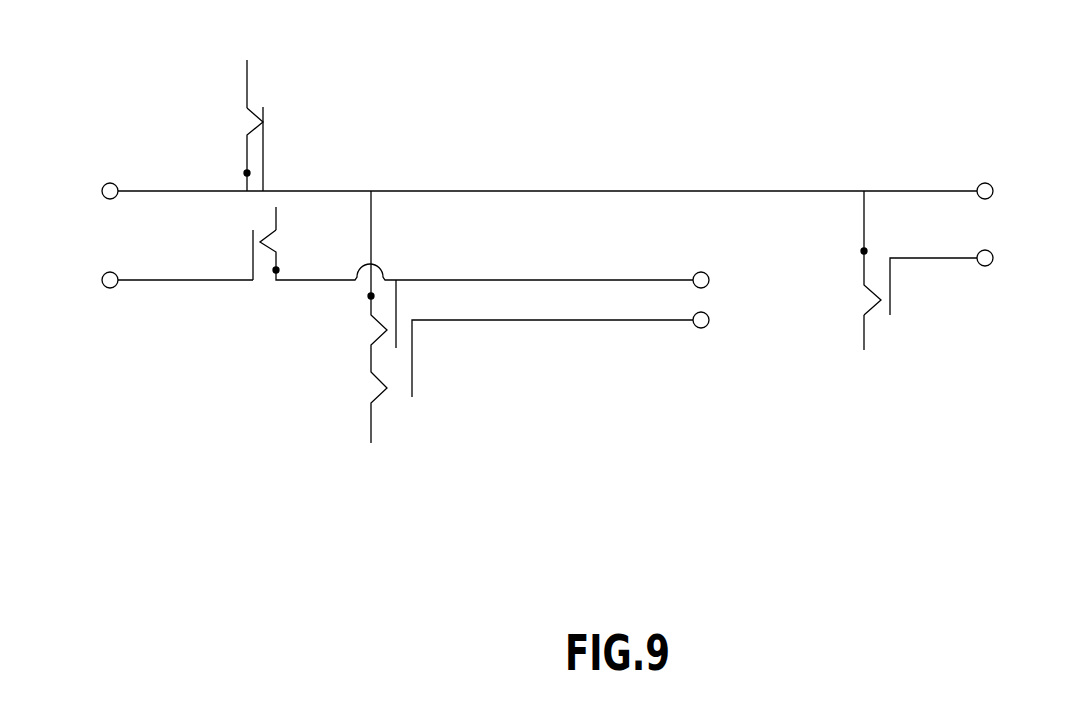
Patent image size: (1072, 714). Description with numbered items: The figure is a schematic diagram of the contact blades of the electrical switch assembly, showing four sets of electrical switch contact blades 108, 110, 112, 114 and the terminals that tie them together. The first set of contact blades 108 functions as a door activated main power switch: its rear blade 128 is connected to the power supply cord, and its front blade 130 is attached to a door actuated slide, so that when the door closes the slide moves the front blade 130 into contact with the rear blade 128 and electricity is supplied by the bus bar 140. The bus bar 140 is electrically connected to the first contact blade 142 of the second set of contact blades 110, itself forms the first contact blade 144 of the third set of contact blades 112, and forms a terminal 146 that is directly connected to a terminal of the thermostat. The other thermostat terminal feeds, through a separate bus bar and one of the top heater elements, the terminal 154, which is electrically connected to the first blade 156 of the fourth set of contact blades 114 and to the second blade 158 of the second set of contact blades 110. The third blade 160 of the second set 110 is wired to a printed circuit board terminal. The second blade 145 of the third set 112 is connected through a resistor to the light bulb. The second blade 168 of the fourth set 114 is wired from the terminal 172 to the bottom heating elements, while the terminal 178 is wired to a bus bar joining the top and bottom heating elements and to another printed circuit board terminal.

The first set of contact blades 108 is at (900, 319).
The second set of contact blades 110 is at (490, 352).
The third set of contact blades 112 is at (283, 104).
The fourth set of contact blades 114 is at (364, 290).
The rear blade 128 is at (890, 287).
The front blade 130 is at (860, 328).
The bus bar 140 is at (545, 190).
The first contact blade 142 is at (368, 423).
The first contact blade 144 is at (264, 168).
The second blade 145 is at (247, 80).
The terminal 146 is at (983, 178).
The terminal 154 is at (700, 271).
The first blade 156 is at (276, 223).
The second blade 158 is at (397, 305).
The third blade 160 is at (412, 363).
The second blade 168 is at (253, 248).
The terminal 172 is at (110, 290).
The terminal 178 is at (695, 329).